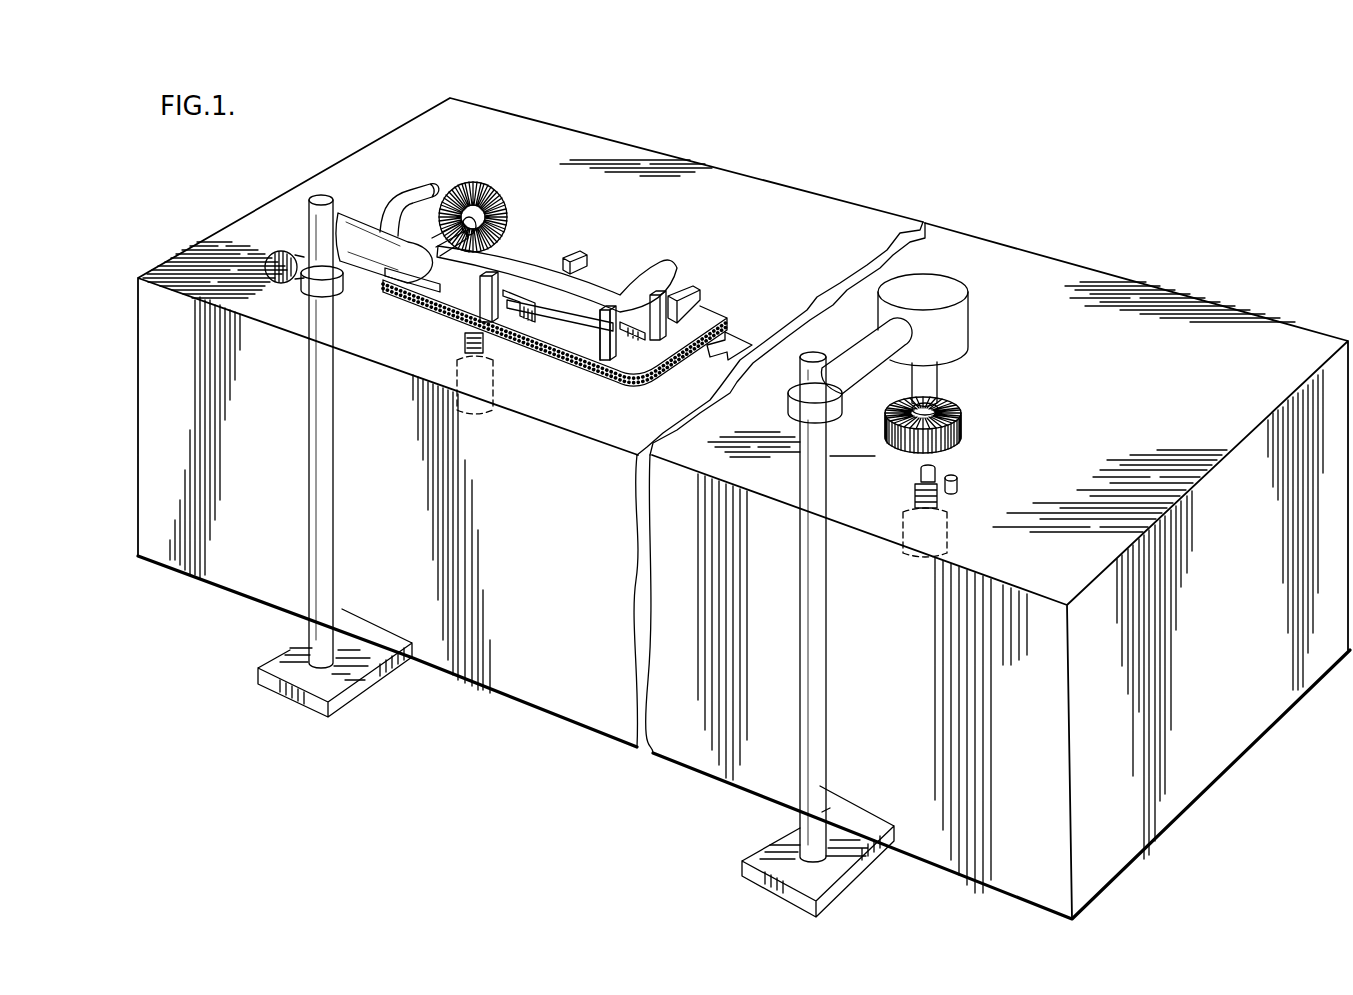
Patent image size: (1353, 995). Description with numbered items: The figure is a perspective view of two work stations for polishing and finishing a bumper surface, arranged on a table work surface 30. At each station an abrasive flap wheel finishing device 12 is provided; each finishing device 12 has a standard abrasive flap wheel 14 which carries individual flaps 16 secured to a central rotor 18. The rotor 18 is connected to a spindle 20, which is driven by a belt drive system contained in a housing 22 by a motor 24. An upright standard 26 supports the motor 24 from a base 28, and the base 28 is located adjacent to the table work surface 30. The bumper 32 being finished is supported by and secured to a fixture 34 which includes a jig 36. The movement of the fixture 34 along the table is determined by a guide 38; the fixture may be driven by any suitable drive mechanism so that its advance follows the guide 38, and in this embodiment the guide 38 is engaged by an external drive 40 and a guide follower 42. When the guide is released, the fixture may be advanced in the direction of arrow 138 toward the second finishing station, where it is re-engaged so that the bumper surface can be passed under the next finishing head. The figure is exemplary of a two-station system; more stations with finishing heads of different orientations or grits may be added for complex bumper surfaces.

The abrasive flap wheel finishing device 12 is at (356, 176).
The abrasive flap wheel 14 is at (754, 469).
The flaps 16 is at (507, 203).
The central rotor 18 is at (507, 220).
The spindle 20 is at (444, 232).
The housing 22 is at (363, 262).
The motor 24 is at (287, 247).
The standard 26 is at (317, 396).
The base 28 is at (287, 670).
The table work surface 30 is at (598, 282).
The bumper 32 is at (622, 290).
The fixture 34 is at (718, 287).
The jig 36 is at (606, 330).
The guide 38 is at (733, 320).
The arrow 138 is at (693, 380).
The external drive 40 is at (901, 572).
The guide follower 42 is at (965, 470).